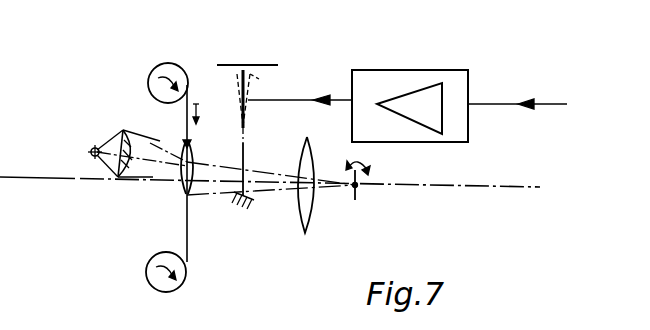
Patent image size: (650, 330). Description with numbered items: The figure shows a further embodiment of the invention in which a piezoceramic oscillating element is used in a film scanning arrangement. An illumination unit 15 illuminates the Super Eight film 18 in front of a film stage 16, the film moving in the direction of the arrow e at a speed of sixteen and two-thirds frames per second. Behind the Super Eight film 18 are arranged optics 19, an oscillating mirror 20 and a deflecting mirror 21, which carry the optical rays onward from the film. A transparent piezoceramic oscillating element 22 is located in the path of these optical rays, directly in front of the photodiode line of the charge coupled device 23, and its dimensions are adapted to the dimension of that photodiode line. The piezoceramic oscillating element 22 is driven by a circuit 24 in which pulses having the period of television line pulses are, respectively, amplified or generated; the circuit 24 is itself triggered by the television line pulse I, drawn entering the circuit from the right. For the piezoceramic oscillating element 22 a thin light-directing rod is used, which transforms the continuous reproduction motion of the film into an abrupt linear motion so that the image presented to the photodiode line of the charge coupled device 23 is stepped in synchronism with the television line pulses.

The illumination unit 15 is at (94, 150).
The film stage 16 is at (178, 180).
The Super Eight film 18 is at (187, 243).
The optics 19 is at (306, 212).
The oscillating mirror 20 is at (357, 190).
The deflecting mirror 21 is at (236, 198).
The piezoceramic oscillating element 22 is at (248, 120).
The charge coupled device 23 is at (243, 65).
The circuit 24 is at (388, 86).